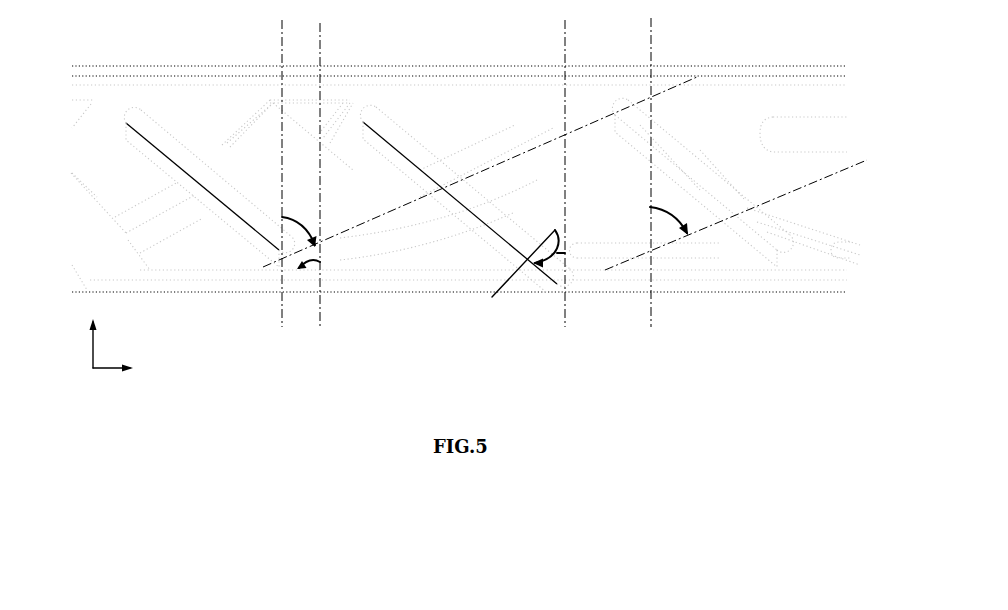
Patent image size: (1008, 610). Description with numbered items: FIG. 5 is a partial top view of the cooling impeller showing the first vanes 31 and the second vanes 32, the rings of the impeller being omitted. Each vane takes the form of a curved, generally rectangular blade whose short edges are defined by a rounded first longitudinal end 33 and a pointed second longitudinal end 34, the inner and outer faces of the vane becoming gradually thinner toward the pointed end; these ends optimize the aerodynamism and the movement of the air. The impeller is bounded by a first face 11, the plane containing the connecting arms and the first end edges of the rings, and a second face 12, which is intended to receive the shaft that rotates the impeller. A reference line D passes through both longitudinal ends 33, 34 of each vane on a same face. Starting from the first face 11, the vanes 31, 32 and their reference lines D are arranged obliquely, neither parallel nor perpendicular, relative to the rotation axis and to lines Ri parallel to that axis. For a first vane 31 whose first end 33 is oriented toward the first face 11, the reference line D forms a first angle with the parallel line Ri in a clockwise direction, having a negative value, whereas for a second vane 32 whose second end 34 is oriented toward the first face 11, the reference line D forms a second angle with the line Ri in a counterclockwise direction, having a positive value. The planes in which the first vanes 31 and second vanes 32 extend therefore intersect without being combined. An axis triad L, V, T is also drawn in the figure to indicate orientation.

The first face 11 is at (607, 287).
The second face 12 is at (614, 63).
The first vanes 31 is at (432, 238).
The second vanes 32 is at (455, 168).
The first longitudinal end 33 is at (145, 118).
The second longitudinal end 34 is at (553, 287).
The lines parallel to the rotation axis Ri is at (282, 33).
The reference line D is at (417, 167).
The longitudinal axis L is at (91, 340).
The vertical axis V is at (98, 363).
The transverse axis T is at (96, 368).